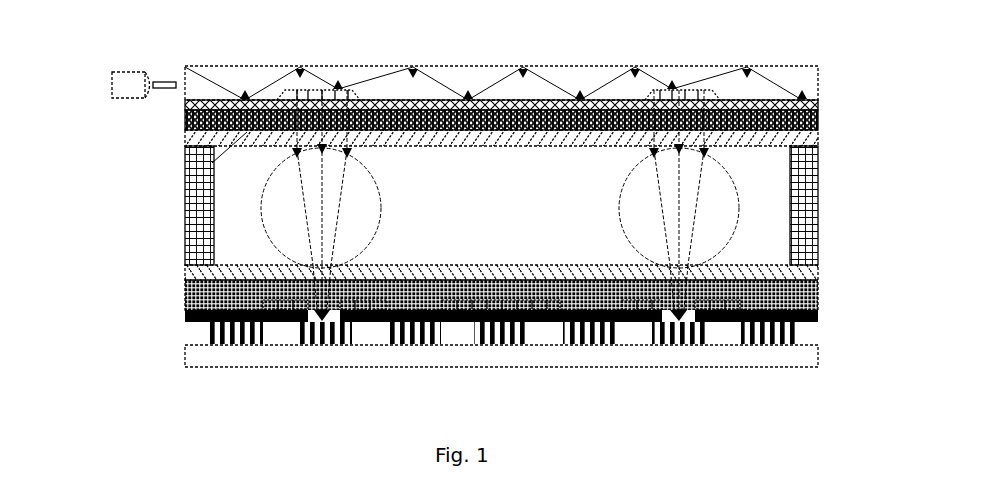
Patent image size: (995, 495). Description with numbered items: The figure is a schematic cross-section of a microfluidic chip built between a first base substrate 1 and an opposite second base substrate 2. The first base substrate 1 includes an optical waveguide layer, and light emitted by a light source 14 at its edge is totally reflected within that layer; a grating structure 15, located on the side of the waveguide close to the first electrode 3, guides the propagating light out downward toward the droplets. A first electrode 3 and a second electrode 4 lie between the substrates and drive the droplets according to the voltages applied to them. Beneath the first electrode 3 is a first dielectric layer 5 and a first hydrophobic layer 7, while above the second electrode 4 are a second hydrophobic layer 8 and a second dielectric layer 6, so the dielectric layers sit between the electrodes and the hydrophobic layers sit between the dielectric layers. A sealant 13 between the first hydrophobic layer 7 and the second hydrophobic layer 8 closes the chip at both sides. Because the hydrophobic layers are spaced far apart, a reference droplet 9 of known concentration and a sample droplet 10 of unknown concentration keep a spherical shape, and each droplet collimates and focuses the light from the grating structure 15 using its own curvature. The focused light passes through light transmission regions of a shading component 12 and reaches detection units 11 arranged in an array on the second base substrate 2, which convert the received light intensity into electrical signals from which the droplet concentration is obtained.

The first base substrate 1 is at (808, 81).
The second base substrate 2 is at (807, 362).
The first electrode 3 is at (812, 104).
The second electrode 4 is at (262, 327).
The first dielectric layer 5 is at (812, 128).
The second dielectric layer 6 is at (807, 298).
The first hydrophobic layer 7 is at (812, 140).
The second hydrophobic layer 8 is at (807, 273).
The reference droplet 9 is at (265, 192).
The sample droplet 10 is at (742, 184).
The detection unit 11 is at (797, 340).
The shading component 12 is at (820, 318).
The sealant 13 is at (810, 218).
The light source 14 is at (130, 84).
The grating structure 15 is at (205, 173).